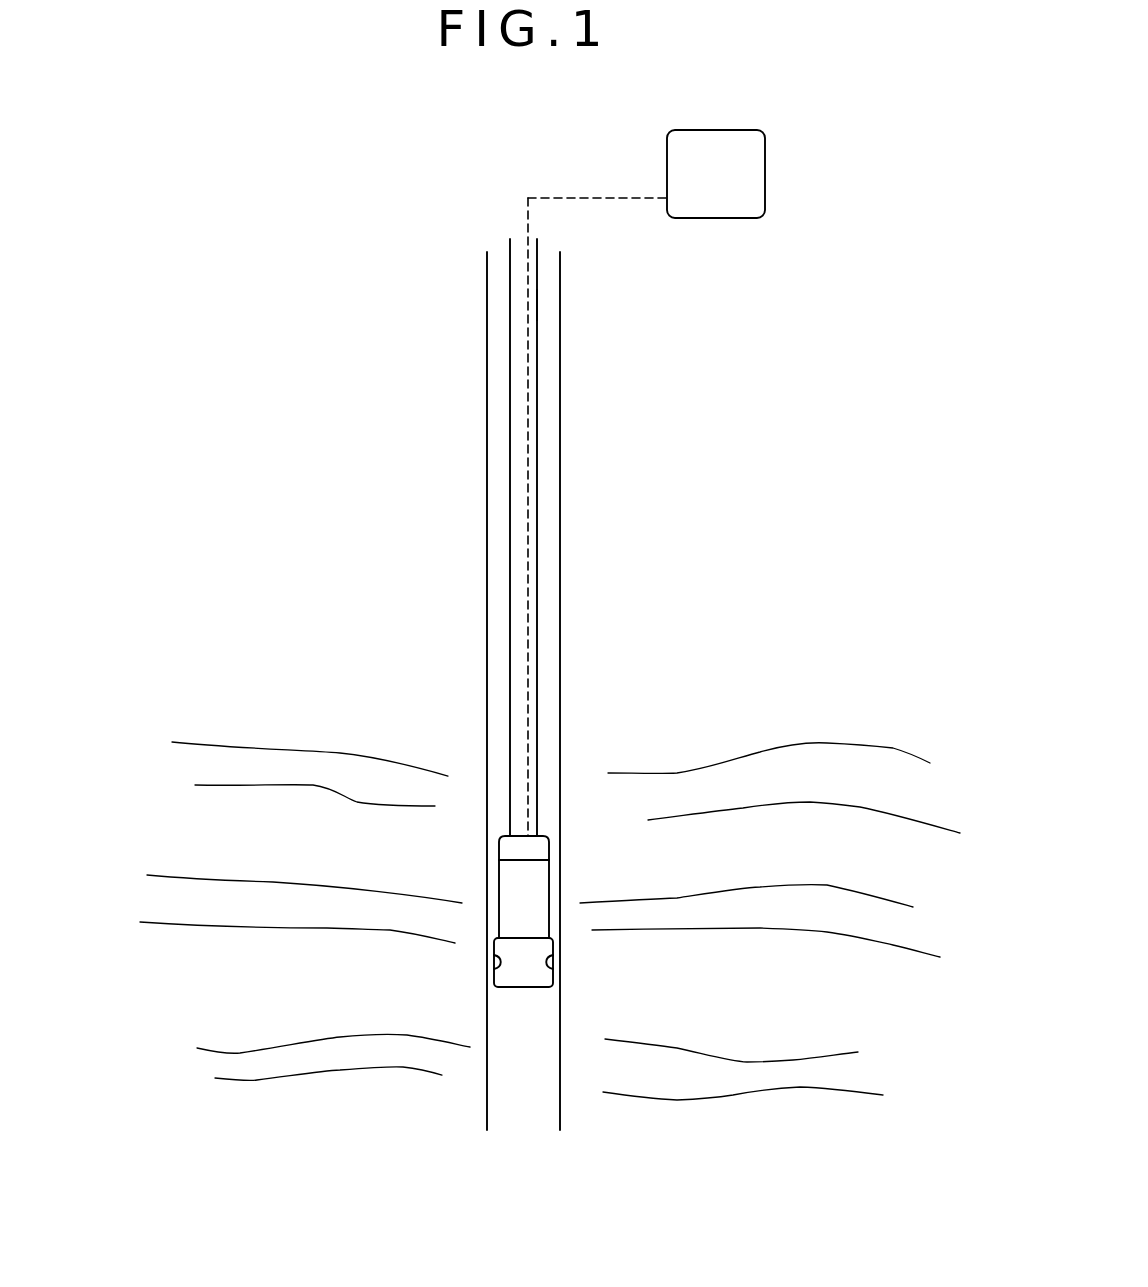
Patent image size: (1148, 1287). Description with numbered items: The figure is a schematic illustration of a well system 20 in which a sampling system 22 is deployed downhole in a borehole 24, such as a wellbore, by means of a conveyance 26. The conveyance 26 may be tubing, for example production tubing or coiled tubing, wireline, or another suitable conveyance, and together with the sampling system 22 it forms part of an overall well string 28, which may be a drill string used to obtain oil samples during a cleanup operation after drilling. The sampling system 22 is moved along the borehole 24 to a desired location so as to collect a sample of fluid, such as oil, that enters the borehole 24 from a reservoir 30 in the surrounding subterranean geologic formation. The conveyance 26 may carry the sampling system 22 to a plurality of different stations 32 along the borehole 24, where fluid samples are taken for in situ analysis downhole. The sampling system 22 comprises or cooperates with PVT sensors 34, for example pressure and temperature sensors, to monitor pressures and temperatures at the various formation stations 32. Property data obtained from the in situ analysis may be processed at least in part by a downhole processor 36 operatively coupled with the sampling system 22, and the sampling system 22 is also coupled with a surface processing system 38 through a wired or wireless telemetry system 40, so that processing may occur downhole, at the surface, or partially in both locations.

The well system 20 is at (477, 178).
The sampling system 22 is at (549, 875).
The borehole 24 is at (560, 365).
The conveyance 26 is at (510, 460).
The well string 28 is at (538, 305).
The reservoir 30 is at (305, 998).
The stations 32 is at (467, 803).
The PVT sensors 34 is at (553, 962).
The downhole processor 36 is at (499, 851).
The surface processing system 38 is at (765, 168).
The telemetry system 40 is at (528, 600).